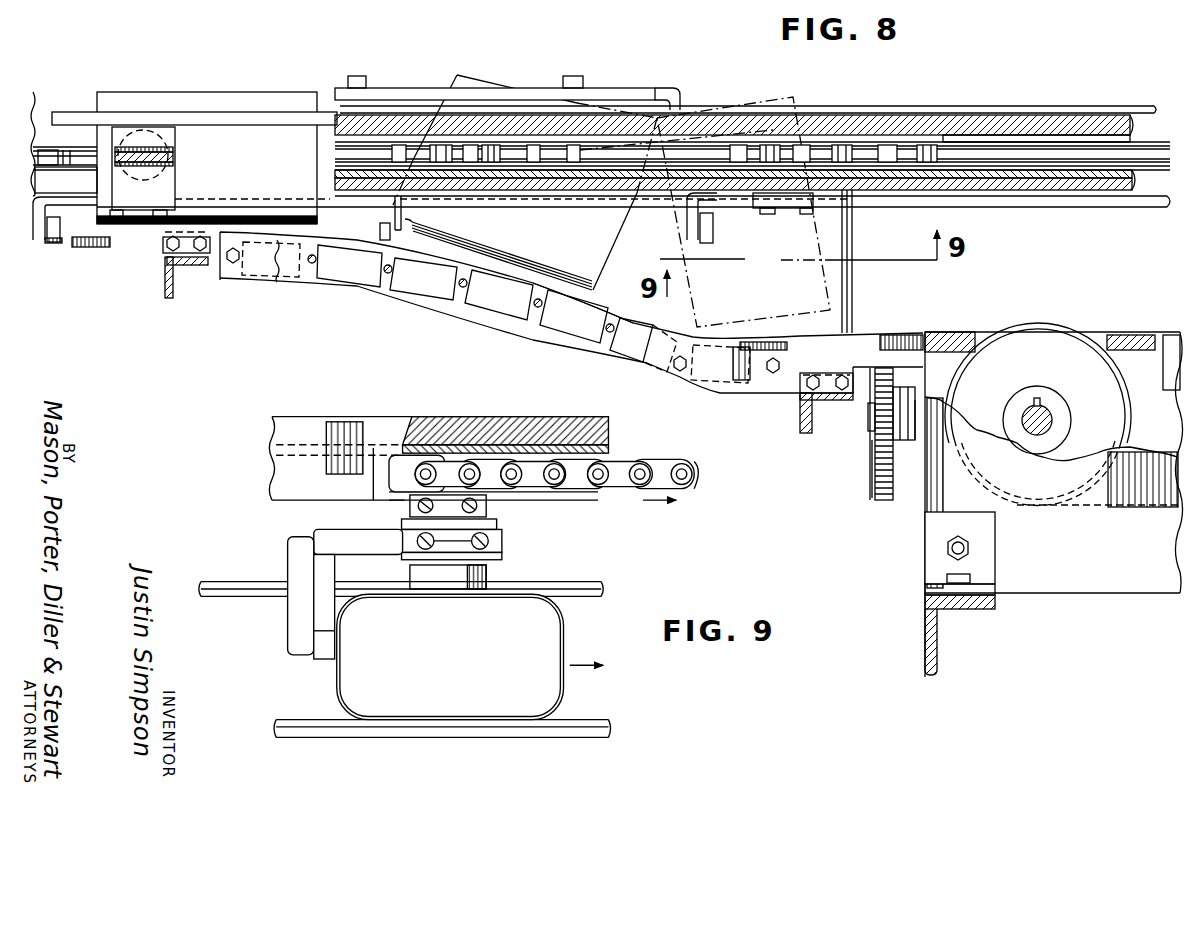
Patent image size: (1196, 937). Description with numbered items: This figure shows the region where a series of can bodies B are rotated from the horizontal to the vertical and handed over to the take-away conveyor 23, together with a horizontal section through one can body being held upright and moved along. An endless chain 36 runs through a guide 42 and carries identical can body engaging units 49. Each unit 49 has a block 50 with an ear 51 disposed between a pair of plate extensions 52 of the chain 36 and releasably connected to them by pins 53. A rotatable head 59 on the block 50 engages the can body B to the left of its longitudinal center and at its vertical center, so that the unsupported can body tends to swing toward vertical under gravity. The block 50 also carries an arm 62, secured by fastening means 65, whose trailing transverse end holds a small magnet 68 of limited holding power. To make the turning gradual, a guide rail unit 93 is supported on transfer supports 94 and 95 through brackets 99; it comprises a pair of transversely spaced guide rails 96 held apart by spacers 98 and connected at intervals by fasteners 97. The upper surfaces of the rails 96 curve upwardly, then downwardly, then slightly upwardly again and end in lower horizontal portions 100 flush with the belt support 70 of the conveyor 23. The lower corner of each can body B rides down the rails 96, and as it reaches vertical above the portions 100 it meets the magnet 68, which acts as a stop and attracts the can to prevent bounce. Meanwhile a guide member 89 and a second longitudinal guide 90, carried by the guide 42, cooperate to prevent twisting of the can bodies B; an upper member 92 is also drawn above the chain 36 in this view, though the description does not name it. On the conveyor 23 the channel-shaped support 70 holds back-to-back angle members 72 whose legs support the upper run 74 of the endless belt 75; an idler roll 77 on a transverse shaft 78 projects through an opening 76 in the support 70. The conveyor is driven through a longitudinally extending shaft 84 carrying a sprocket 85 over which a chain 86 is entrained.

In FIG. 8, the can body B is at (198, 97).
In FIG. 9, the can body B is at (548, 626).
In FIG. 8, the take-away conveyor 23 is at (913, 539).
In FIG. 8, the endless chain 36 is at (928, 147).
In FIG. 9, the endless chain 36 is at (648, 453).
In FIG. 8, the guide 42 is at (1003, 120).
In FIG. 9, the guide 42 is at (507, 420).
In FIG. 8, the can body engaging unit 49 is at (144, 125).
In FIG. 9, the can body engaging unit 49 is at (497, 517).
In FIG. 8, the block 50 is at (168, 178).
In FIG. 9, the block 50 is at (488, 550).
In FIG. 8, the ear 51 is at (172, 158).
In FIG. 8, the plate extensions 52 is at (170, 148).
In FIG. 9, the plate extensions 52 is at (390, 509).
In FIG. 9, the pins 53 is at (448, 507).
In FIG. 9, the head 59 is at (407, 572).
In FIG. 8, the arm 62 is at (86, 196).
In FIG. 9, the arm 62 is at (332, 520).
In FIG. 9, the fastening means 65 is at (452, 541).
In FIG. 8, the small magnet 68 is at (52, 244).
In FIG. 9, the small magnet 68 is at (327, 648).
In FIG. 8, the belt support 70 is at (955, 333).
In FIG. 8, the angle members 72 is at (1165, 366).
In FIG. 8, the upper run 74 is at (1100, 333).
In FIG. 8, the endless conveyor belt 75 is at (956, 385).
In FIG. 8, the opening 76 is at (990, 335).
In FIG. 8, the idler roll 77 is at (1127, 423).
In FIG. 8, the transverse shaft 78 is at (1048, 425).
In FIG. 8, the longitudinally extending shaft 84 is at (868, 433).
In FIG. 8, the sprocket 85 is at (875, 473).
In FIG. 8, the chain 86 is at (875, 503).
In FIG. 8, the guide member 89 is at (325, 203).
In FIG. 9, the guide member 89 is at (557, 717).
In FIG. 8, the second longitudinal guide 90 is at (302, 112).
In FIG. 9, the second longitudinal guide 90 is at (569, 574).
In FIG. 8, the cover plate 92 is at (545, 89).
In FIG. 8, the guide rail unit 93 is at (418, 300).
In FIG. 8, the transfer support 94 is at (165, 288).
In FIG. 8, the transfer support 95 is at (823, 400).
In FIG. 8, the guide rails 96 is at (528, 321).
In FIG. 8, the fasteners 97 is at (311, 265).
In FIG. 8, the spacers 98 is at (357, 284).
In FIG. 8, the brackets 99 is at (163, 256).
In FIG. 8, the lower horizontal portions 100 is at (915, 333).